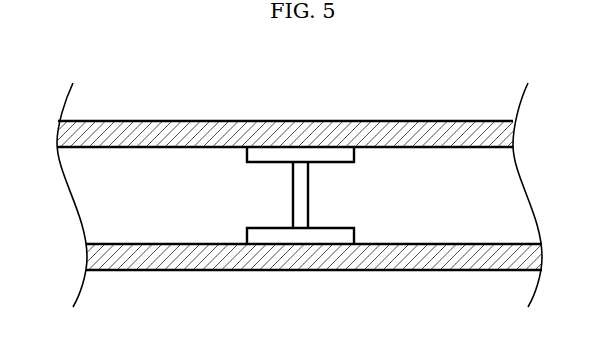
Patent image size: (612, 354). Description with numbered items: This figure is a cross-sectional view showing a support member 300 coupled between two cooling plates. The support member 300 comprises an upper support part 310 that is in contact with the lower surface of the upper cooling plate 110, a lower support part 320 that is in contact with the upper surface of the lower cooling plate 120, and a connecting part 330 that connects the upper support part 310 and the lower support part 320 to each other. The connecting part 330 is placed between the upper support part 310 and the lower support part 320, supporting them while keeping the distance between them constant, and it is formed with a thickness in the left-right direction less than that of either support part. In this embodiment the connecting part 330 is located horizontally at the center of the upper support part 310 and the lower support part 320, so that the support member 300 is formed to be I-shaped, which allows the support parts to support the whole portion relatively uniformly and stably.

The upper cooling plate 110 is at (300, 125).
The lower cooling plate 120 is at (300, 265).
The support member 300 is at (353, 195).
The upper support part 310 is at (332, 152).
The lower support part 320 is at (332, 235).
The connecting part 330 is at (307, 195).